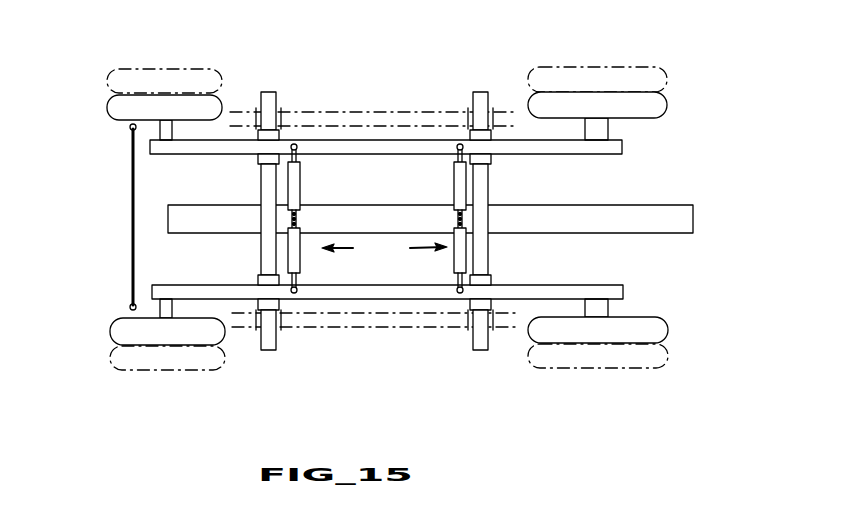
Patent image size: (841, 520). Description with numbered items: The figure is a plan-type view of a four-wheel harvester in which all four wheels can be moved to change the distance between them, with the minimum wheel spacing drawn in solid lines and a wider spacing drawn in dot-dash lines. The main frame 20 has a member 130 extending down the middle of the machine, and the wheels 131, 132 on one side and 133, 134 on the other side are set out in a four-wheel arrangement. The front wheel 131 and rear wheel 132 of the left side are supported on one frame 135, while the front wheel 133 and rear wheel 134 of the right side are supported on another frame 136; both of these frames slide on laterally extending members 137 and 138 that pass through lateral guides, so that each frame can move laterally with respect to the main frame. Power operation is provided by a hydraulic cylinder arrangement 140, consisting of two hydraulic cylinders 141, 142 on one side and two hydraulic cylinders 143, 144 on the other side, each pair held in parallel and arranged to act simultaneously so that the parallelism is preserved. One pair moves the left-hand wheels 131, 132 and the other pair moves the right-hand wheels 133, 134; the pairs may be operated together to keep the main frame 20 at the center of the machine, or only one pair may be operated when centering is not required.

The main frame 20 is at (682, 248).
The member 130 is at (662, 204).
The front wheel 131 is at (669, 333).
The rear wheel 132 is at (111, 340).
The front wheel 133 is at (556, 65).
The rear wheel 134 is at (158, 68).
The frame 135 is at (547, 283).
The frame 136 is at (345, 110).
The laterally extending member 137 is at (490, 252).
The laterally extending member 138 is at (261, 258).
The hydraulic cylinder arrangement 140 is at (384, 250).
The hydraulic cylinder 141 is at (454, 263).
The hydraulic cylinder 142 is at (302, 263).
The hydraulic cylinder 143 is at (453, 176).
The hydraulic cylinder 144 is at (300, 178).